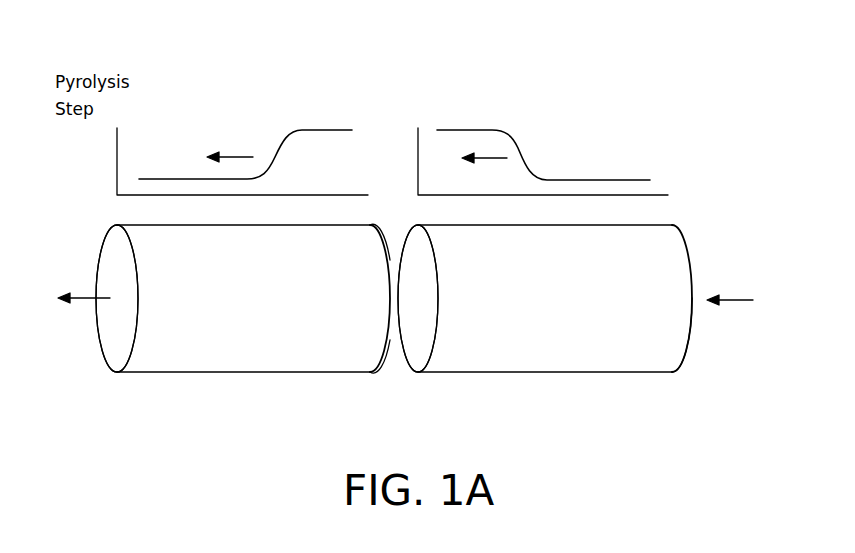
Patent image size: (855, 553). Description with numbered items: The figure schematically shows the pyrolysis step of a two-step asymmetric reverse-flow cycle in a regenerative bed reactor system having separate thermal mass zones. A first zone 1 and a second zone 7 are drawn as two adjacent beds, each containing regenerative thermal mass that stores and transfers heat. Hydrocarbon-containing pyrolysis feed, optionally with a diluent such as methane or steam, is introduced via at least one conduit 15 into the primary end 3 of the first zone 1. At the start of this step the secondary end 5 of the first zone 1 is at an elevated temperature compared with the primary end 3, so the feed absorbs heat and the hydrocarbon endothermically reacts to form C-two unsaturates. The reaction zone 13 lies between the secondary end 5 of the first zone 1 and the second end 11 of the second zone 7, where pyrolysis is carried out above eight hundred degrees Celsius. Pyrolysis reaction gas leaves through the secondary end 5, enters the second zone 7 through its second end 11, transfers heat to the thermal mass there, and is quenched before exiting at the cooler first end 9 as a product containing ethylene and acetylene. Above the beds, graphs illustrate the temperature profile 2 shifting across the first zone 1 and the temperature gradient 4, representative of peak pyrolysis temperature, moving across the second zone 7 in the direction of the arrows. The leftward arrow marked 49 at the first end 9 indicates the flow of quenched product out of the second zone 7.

The first zone 1 is at (568, 309).
The temperature profile 2 is at (518, 150).
The primary end 3 is at (690, 335).
The temperature gradient 4 is at (310, 128).
The secondary end 5 is at (425, 311).
The second zone 7 is at (264, 311).
The first end 9 is at (121, 336).
The second end 11 is at (378, 372).
The reaction zone 13 is at (390, 232).
The conduit 15 is at (735, 298).
The gas flow outlet direction 49 is at (88, 295).